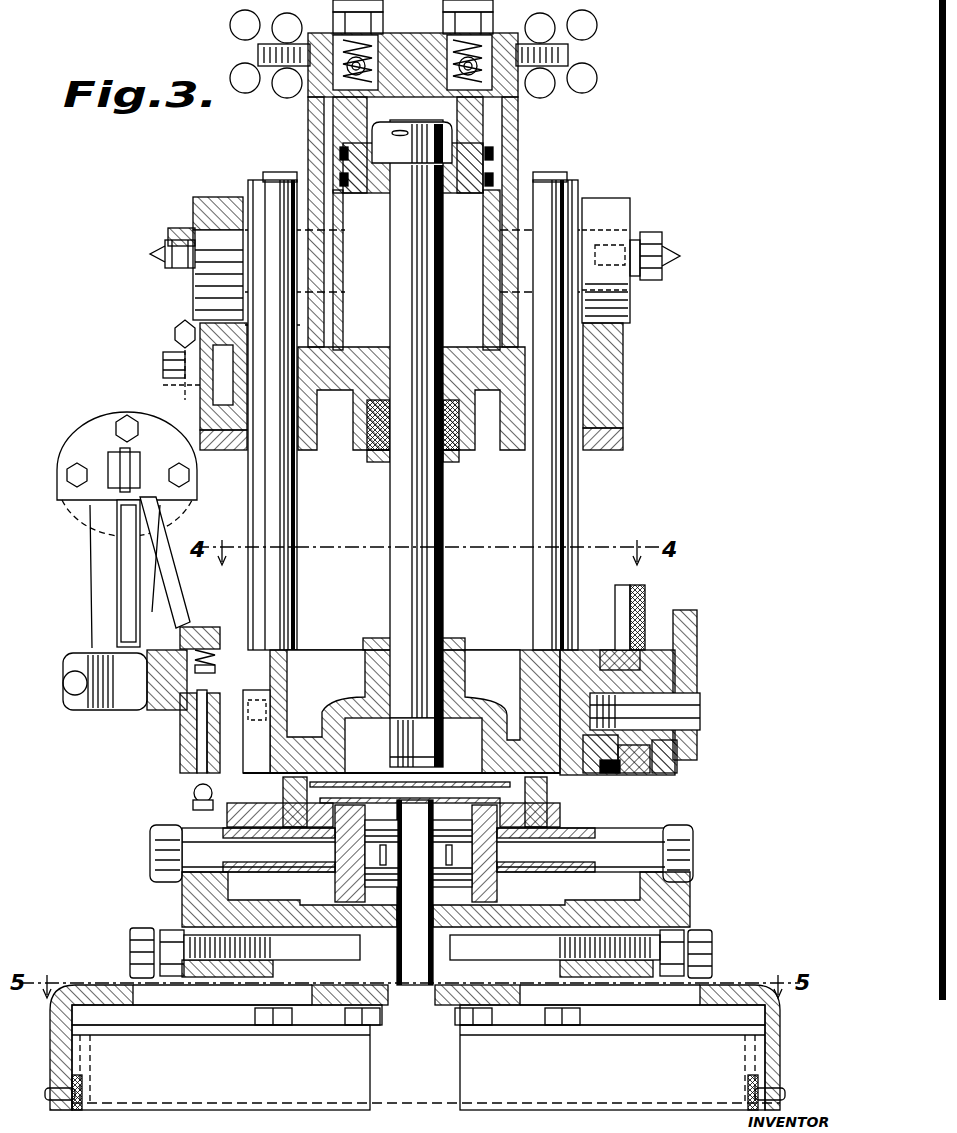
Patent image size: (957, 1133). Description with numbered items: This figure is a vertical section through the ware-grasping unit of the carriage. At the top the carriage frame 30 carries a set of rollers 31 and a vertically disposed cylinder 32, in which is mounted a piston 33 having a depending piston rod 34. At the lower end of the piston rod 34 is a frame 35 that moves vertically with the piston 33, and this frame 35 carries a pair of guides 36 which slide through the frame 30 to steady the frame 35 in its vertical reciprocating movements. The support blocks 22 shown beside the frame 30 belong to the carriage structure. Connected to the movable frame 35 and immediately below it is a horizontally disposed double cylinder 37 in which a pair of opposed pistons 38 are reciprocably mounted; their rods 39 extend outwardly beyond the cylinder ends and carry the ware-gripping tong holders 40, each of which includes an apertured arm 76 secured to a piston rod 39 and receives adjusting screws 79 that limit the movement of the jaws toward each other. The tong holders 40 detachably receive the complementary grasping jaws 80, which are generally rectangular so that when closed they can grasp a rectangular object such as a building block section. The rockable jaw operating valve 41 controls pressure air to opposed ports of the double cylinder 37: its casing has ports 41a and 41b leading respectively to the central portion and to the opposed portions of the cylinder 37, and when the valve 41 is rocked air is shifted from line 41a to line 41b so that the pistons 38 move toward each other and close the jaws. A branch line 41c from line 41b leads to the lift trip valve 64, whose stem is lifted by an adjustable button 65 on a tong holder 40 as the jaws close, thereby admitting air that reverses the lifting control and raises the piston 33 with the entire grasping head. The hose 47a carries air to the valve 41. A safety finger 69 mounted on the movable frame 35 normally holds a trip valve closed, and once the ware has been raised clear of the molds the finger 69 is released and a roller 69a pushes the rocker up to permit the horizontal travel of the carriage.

The support bracket 22 is at (195, 350).
The frame 30 is at (357, 453).
The rollers 31 is at (222, 198).
The cylinder 32 is at (515, 175).
The piston 33 is at (490, 145).
The piston rod 34 is at (416, 552).
The frame 35 is at (475, 702).
The guides 36 is at (297, 630).
The double cylinder 37 is at (297, 806).
The pistons 38 is at (350, 829).
The rods 39 is at (421, 853).
The tong holders 40 is at (196, 901).
The valve 41 is at (683, 692).
The port 41a is at (667, 762).
The port 41b is at (610, 775).
The branch line 41c is at (207, 625).
The set screw 47a is at (642, 602).
The lift trip valve 64 is at (185, 728).
The adjustable button 65 is at (188, 794).
The safety finger 69 is at (150, 532).
The roller 69a is at (112, 700).
The apertured arm 76 is at (152, 876).
The adjusting screws 79 is at (155, 935).
The grasping jaw 80 is at (55, 1045).